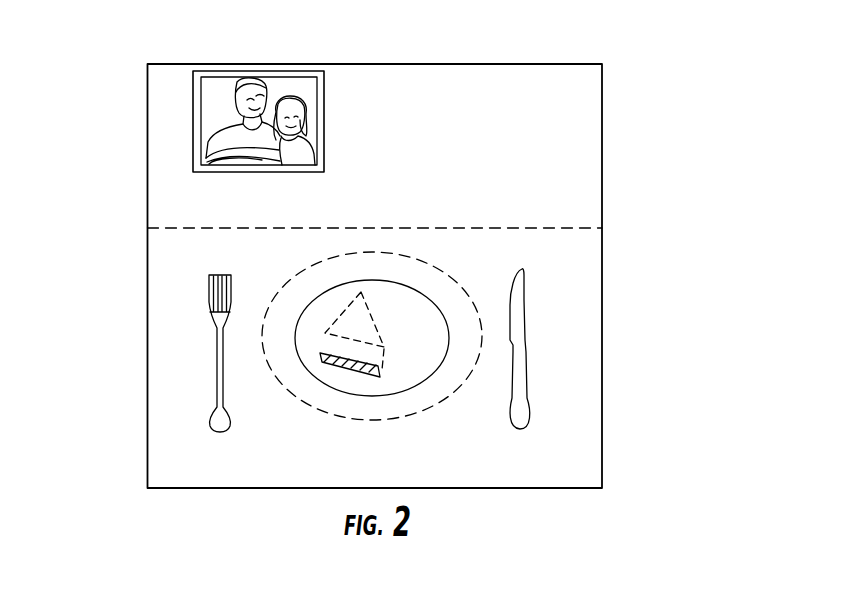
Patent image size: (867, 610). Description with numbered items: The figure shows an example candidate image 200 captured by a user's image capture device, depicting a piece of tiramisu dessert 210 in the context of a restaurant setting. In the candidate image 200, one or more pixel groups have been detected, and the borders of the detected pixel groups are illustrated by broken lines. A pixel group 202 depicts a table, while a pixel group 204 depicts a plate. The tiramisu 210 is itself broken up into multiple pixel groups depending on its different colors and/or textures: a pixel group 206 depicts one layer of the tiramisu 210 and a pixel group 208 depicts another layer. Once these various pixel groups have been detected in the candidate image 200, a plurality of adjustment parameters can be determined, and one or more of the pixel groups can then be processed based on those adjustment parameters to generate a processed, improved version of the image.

The candidate image 200 is at (432, 64).
The pixel group 202 is at (569, 226).
The pixel group 204 is at (440, 403).
The pixel group 206 is at (333, 343).
The pixel group 208 is at (332, 367).
The tiramisu dessert 210 is at (332, 305).